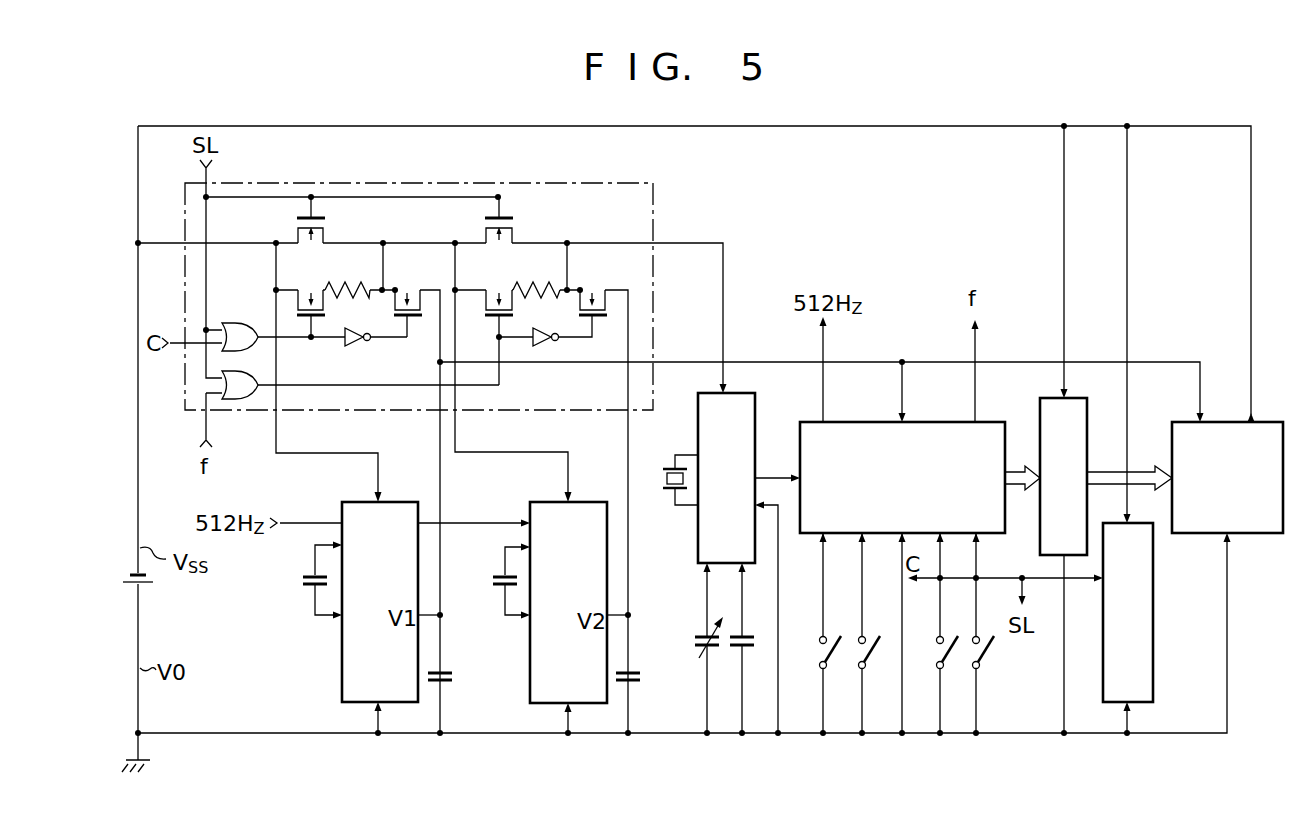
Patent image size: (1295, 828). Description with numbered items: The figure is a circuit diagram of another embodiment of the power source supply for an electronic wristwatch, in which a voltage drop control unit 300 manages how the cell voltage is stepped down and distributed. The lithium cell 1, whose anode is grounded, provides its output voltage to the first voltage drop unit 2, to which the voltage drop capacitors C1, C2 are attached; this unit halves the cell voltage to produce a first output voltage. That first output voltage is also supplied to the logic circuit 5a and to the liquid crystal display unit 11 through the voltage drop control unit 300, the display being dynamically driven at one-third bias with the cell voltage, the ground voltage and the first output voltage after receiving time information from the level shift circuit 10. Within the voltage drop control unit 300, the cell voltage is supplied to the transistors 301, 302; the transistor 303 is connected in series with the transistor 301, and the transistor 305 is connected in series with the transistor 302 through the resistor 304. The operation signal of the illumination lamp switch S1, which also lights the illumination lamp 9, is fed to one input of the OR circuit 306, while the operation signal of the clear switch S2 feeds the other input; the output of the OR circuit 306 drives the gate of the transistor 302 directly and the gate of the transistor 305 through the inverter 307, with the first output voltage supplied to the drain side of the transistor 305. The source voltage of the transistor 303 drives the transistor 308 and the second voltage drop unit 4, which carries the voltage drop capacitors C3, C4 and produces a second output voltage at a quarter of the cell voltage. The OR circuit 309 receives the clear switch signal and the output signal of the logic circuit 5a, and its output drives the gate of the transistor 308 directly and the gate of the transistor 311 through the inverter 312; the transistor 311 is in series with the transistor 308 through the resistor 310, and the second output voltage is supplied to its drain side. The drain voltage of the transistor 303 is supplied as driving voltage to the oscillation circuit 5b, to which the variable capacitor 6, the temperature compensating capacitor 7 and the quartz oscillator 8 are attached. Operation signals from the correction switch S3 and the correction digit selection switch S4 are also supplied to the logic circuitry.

The lithium cell 1 is at (143, 588).
The first voltage drop unit 2 is at (345, 650).
The second voltage drop unit 4 is at (587, 512).
The logic circuit 5a is at (932, 432).
The oscillation circuit 5b is at (745, 412).
The variable capacitor 6 is at (696, 652).
The temperature compensating capacitor 7 is at (733, 652).
The quartz oscillator 8 is at (653, 478).
The illumination lamp 9 is at (1145, 650).
The level shift circuit 10 is at (1068, 410).
The liquid crystal display unit 11 is at (1192, 432).
The voltage drop control unit 300 is at (655, 200).
The transistor 301 is at (331, 226).
The transistor 302 is at (311, 287).
The transistor 303 is at (521, 226).
The resistor 304 is at (350, 287).
The transistor 305 is at (410, 287).
The OR circuit 306 is at (240, 323).
The inverter 307 is at (357, 349).
The transistor 308 is at (498, 287).
The OR circuit 309 is at (242, 399).
The resistor 310 is at (538, 287).
The transistor 311 is at (600, 287).
The inverter 312 is at (545, 330).
The voltage drop capacitor C1 is at (303, 577).
The voltage drop capacitor C2 is at (456, 678).
The voltage drop capacitor C3 is at (492, 579).
The voltage drop capacitor C4 is at (647, 682).
The illumination lamp switch S1 is at (987, 654).
The clear switch S2 is at (951, 654).
The correction switch S3 is at (873, 654).
The correction digit selection switch S4 is at (834, 654).